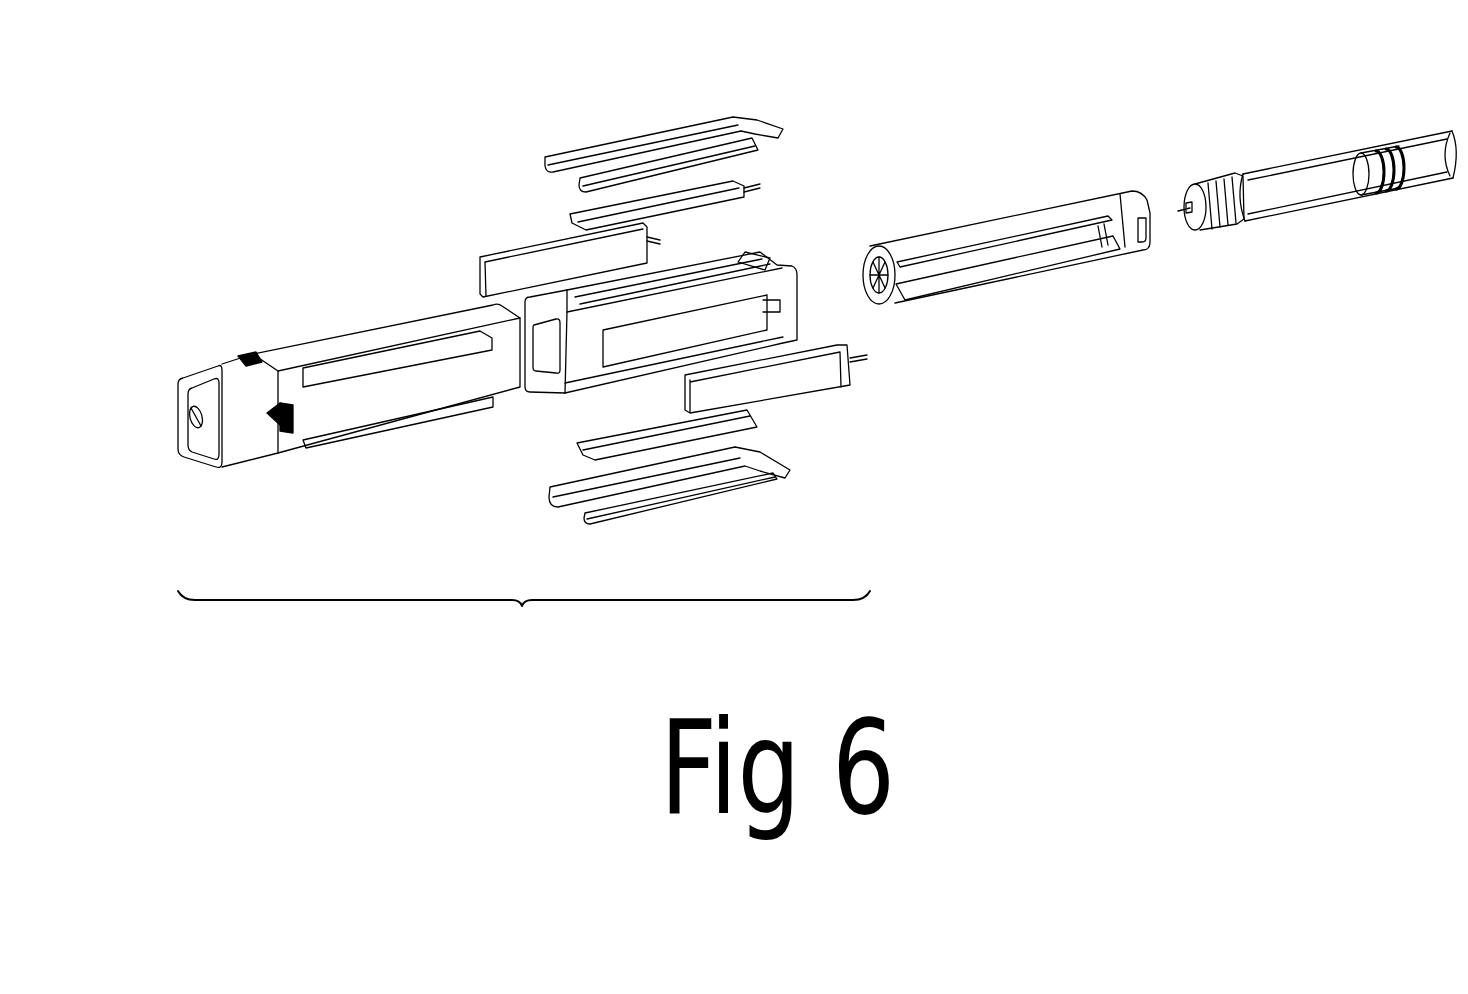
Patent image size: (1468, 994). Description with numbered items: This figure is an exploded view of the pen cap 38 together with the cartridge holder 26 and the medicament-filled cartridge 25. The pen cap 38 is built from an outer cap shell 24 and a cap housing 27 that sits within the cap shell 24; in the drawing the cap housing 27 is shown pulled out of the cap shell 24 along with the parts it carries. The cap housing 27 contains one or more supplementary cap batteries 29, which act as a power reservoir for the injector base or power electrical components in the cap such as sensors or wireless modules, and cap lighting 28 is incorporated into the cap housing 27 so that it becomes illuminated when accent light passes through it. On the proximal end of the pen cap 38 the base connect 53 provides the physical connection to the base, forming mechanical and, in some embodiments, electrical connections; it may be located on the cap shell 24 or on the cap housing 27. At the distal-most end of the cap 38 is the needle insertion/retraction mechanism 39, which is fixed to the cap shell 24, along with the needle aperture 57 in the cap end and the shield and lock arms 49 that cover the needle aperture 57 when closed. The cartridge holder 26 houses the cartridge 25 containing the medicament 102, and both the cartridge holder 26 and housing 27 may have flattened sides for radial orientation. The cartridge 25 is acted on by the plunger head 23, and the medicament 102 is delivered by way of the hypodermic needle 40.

The plunger head 23 is at (1349, 211).
The cap shell 24 is at (353, 354).
The cartridge 25 is at (1348, 130).
The cartridge holder 26 is at (1006, 190).
The cap housing 27 is at (719, 239).
The cap lighting 28 is at (660, 299).
The cap batteries 29 is at (691, 289).
The pen cap 38 is at (524, 625).
The needle insertion/retraction mechanism 39 is at (200, 386).
The hypodermic needle 40 is at (1242, 141).
The shield and lock arms 49 is at (151, 462).
The base connect 53 is at (967, 341).
The needle aperture 57 is at (144, 436).
The medicament 102 is at (1317, 184).